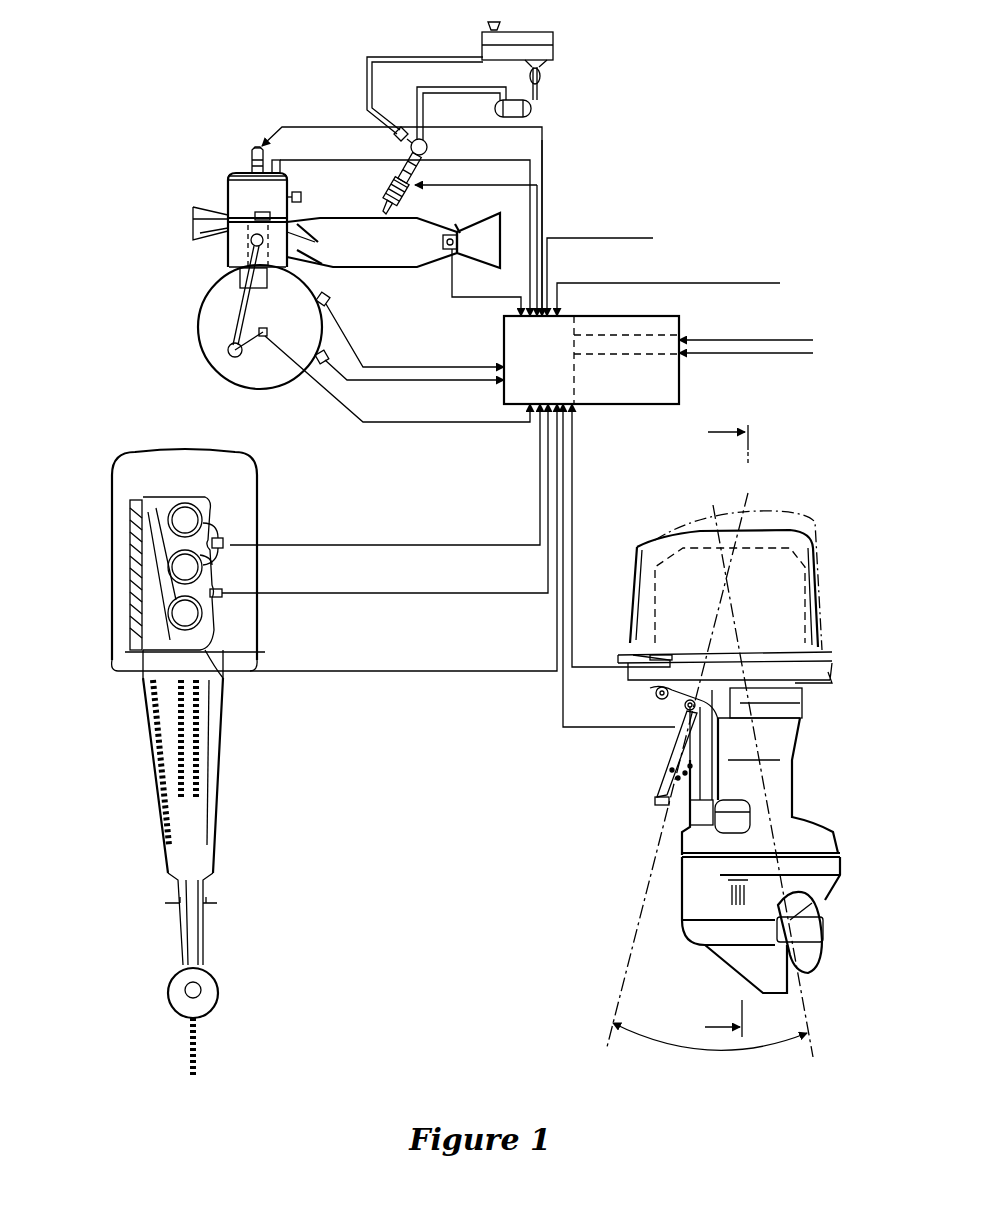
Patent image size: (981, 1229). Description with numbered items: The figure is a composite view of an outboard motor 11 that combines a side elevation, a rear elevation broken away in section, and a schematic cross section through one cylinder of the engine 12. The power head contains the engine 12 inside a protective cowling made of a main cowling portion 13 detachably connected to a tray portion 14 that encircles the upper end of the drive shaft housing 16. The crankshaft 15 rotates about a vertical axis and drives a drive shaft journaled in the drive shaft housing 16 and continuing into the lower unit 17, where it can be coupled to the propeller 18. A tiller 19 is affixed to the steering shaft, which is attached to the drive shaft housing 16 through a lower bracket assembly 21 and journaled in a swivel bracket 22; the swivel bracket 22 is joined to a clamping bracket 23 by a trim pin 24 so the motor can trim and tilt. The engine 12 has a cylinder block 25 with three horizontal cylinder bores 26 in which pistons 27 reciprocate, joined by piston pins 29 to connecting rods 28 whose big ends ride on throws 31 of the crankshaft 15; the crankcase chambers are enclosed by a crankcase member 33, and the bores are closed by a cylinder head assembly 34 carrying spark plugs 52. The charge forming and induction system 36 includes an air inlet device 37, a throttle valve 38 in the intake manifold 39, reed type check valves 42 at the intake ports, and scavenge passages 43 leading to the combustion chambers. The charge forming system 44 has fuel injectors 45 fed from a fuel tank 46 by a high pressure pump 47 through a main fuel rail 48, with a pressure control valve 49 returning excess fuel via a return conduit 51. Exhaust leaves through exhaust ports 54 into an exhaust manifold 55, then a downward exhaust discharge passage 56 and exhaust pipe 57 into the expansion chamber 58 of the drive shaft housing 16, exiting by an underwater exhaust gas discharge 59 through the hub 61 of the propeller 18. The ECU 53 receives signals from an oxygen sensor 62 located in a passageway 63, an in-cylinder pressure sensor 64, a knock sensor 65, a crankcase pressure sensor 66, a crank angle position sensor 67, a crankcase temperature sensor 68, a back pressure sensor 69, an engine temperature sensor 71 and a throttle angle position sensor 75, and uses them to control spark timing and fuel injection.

The outboard motor 11 is at (143, 428).
The internal combustion engine 12 is at (166, 116).
The main cowling portion 13 is at (643, 550).
The tray portion 14 is at (830, 676).
The crankshaft 15 is at (266, 329).
The drive shaft housing 16 is at (215, 808).
The lower unit 17 is at (205, 940).
The propeller 18 is at (812, 960).
The tiller 19 is at (630, 683).
The lower bracket assembly 21 is at (750, 815).
The swivel bracket 22 is at (690, 802).
The clamping bracket 23 is at (658, 762).
The trim pin 24 is at (658, 697).
The cylinder block 25 is at (157, 497).
The cylinder bores 26 is at (229, 198).
The pistons 27 is at (228, 258).
The connecting rods 28 is at (243, 325).
The piston pins 29 is at (247, 240).
The throws 31 is at (228, 352).
The crankcase member 33 is at (233, 387).
The cylinder head assembly 34 is at (245, 171).
The charge forming and induction system 36 is at (422, 328).
The air inlet device 37 is at (493, 213).
The throttle valve 38 is at (458, 240).
The intake manifold 39 is at (415, 268).
The reed type check valves 42 is at (318, 238).
The scavenge passages 43 is at (228, 180).
The charge forming system 44 is at (582, 53).
The fuel injectors 45 is at (450, 186).
The fuel tank 46 is at (553, 34).
The high pressure pump 47 is at (533, 108).
The main fuel rail 48 is at (428, 147).
The pressure control valve 49 is at (400, 127).
The return conduit 51 is at (378, 56).
The spark plugs 52 is at (258, 148).
The ECU 53 is at (628, 405).
The exhaust ports 54 is at (195, 207).
The exhaust manifold 55 is at (193, 230).
The exhaust discharge passage 56 is at (135, 674).
The exhaust pipe 57 is at (160, 783).
The expansion chamber 58 is at (170, 833).
The underwater exhaust gas discharge 59 is at (178, 996).
The hub 61 is at (820, 925).
The oxygen sensor 62 is at (224, 540).
The passageway 63 is at (215, 560).
The in-cylinder pressure sensor 64 is at (279, 160).
The knock sensor 65 is at (302, 197).
The pressure sensor 66 is at (329, 302).
The crank angle position sensor 67 is at (266, 340).
The crankcase temperature sensor 68 is at (322, 363).
The back pressure sensor 69 is at (228, 672).
The engine temperature sensor 71 is at (222, 597).
The throttle angle position sensor 75 is at (427, 240).